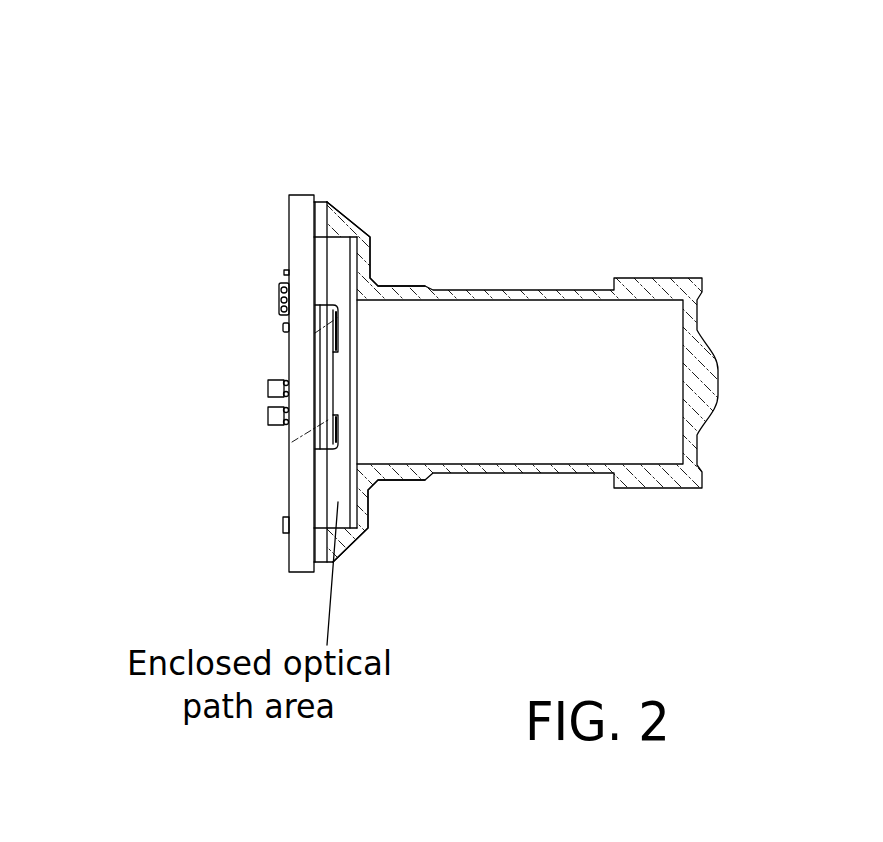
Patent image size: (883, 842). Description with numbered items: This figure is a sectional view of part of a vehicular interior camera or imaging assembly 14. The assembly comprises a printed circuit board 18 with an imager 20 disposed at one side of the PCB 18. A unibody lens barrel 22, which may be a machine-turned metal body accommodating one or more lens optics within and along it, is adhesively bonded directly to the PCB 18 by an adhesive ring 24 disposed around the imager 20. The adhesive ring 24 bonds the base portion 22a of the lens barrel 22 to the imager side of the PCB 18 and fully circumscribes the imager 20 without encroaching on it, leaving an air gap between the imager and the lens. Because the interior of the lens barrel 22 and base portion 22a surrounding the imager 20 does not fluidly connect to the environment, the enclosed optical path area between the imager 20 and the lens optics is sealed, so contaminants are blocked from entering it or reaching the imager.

The vehicular interior camera or imaging assembly 14 is at (713, 217).
The printed circuit board 18 is at (297, 242).
The imager 20 is at (333, 380).
The unibody lens barrel 22 is at (532, 290).
The base portion 22a is at (370, 248).
The adhesive ring 24 is at (323, 212).